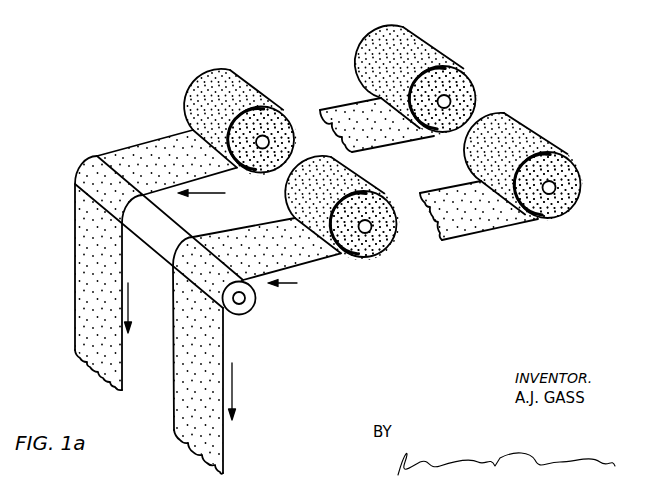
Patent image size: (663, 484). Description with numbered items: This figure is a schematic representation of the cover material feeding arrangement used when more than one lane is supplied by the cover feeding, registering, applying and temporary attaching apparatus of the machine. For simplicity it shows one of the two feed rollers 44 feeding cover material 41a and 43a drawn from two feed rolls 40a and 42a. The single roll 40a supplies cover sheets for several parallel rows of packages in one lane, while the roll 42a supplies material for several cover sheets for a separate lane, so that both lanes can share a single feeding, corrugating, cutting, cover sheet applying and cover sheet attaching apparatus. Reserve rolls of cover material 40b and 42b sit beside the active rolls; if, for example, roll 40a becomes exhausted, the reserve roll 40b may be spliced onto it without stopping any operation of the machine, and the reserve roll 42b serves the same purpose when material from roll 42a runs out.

The feed roll 40a is at (217, 80).
The reserve roll of cover material 40b is at (386, 44).
The cover material 41a is at (157, 150).
The feed roll 42a is at (377, 246).
The reserve roll of cover material 42b is at (572, 200).
The cover material 43a is at (298, 270).
The feed roller 44 is at (255, 304).